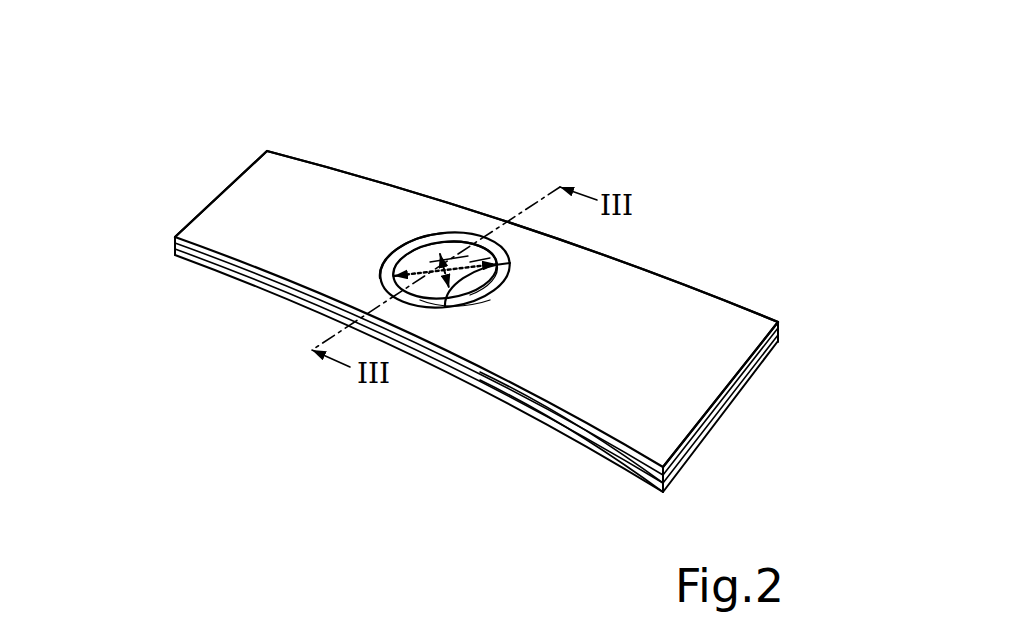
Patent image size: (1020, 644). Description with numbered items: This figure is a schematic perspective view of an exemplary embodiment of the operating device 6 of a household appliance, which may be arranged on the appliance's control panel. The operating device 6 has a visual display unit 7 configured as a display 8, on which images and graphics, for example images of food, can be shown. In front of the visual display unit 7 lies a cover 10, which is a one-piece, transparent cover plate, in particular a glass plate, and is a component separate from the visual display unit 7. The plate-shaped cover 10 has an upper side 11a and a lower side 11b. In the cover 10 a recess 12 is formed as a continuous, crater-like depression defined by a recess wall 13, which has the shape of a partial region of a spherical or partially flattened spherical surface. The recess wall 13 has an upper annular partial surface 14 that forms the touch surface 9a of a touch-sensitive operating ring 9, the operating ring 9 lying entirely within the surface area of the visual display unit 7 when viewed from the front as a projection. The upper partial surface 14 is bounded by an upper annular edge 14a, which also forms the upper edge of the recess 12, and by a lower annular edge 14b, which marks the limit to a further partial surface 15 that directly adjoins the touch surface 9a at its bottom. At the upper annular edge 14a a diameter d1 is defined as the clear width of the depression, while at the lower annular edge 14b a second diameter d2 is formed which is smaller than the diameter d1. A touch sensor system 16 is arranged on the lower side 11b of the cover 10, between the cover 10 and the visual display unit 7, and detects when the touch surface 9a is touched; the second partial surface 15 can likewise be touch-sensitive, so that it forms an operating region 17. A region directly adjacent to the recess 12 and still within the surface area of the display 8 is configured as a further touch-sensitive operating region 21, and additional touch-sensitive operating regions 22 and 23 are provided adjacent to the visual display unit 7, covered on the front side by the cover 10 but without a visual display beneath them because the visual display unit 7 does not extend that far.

The operating device 6 is at (692, 273).
The visual display unit 7 is at (565, 433).
The display 8 is at (520, 413).
The touch-sensitive operating ring 9 is at (438, 234).
The touch surface 9a is at (502, 244).
The cover 10 is at (580, 270).
The upper side 11a is at (313, 190).
The lower side 11b is at (753, 367).
The recess 12 is at (457, 313).
The recess wall 13 is at (468, 256).
The upper annular partial surface 14 is at (418, 240).
The upper annular edge 14a is at (483, 297).
The lower annular edge 14b is at (400, 247).
The further partial surface 15 is at (450, 250).
The touch sensor system 16 is at (270, 295).
The operating region 17 is at (486, 258).
The further touch-sensitive operating region 21 is at (517, 278).
The touch-sensitive operating region 22 is at (605, 460).
The touch-sensitive operating region 23 is at (192, 262).
The diameter d1 is at (503, 276).
The second diameter d2 is at (437, 297).